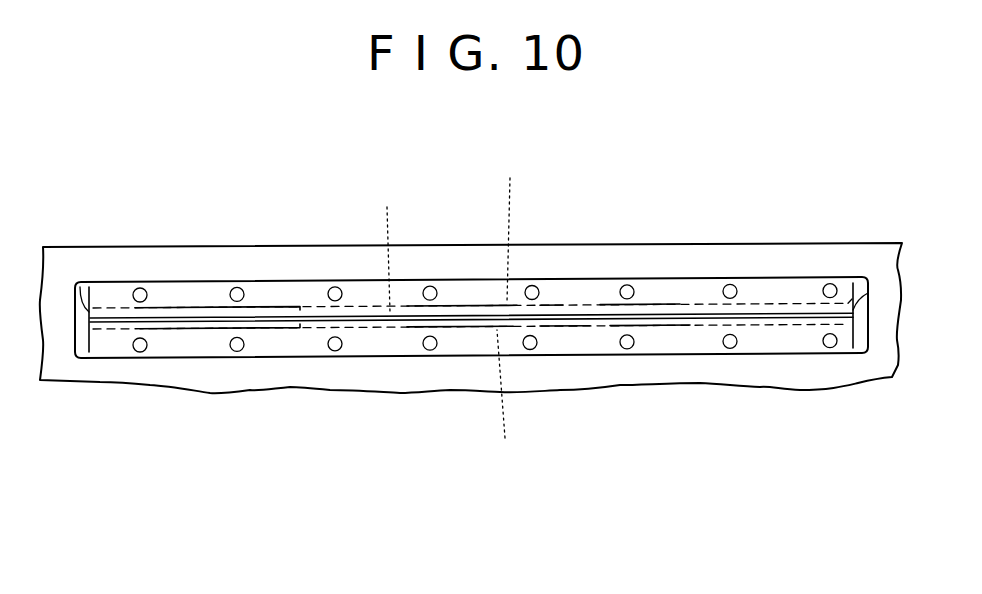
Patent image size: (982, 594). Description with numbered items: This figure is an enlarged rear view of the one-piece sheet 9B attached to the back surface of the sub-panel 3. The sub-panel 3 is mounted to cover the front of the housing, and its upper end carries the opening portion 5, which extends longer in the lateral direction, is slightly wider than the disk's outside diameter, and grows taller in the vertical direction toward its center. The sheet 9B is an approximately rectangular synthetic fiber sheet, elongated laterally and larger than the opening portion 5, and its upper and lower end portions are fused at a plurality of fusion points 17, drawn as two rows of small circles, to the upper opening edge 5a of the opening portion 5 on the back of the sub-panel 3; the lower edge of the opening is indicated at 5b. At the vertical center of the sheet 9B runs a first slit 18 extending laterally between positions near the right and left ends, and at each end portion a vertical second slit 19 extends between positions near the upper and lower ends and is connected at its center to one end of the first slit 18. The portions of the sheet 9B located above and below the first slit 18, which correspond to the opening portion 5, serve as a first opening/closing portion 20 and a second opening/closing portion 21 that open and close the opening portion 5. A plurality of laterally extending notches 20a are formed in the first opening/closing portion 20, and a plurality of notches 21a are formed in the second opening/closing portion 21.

The sub-panel 3 is at (690, 244).
The opening portion 5 is at (388, 246).
The upper opening edge 5a is at (511, 226).
The cable second portion 5b is at (507, 397).
The sheet 9B is at (318, 280).
The fusion points 17 is at (237, 287).
The first slit 18 is at (597, 325).
The second slits 19 is at (77, 283).
The first opening/closing portion 20 is at (608, 304).
The notches 20a is at (292, 308).
The second opening/closing portion 21 is at (397, 321).
The notches 21a is at (282, 330).